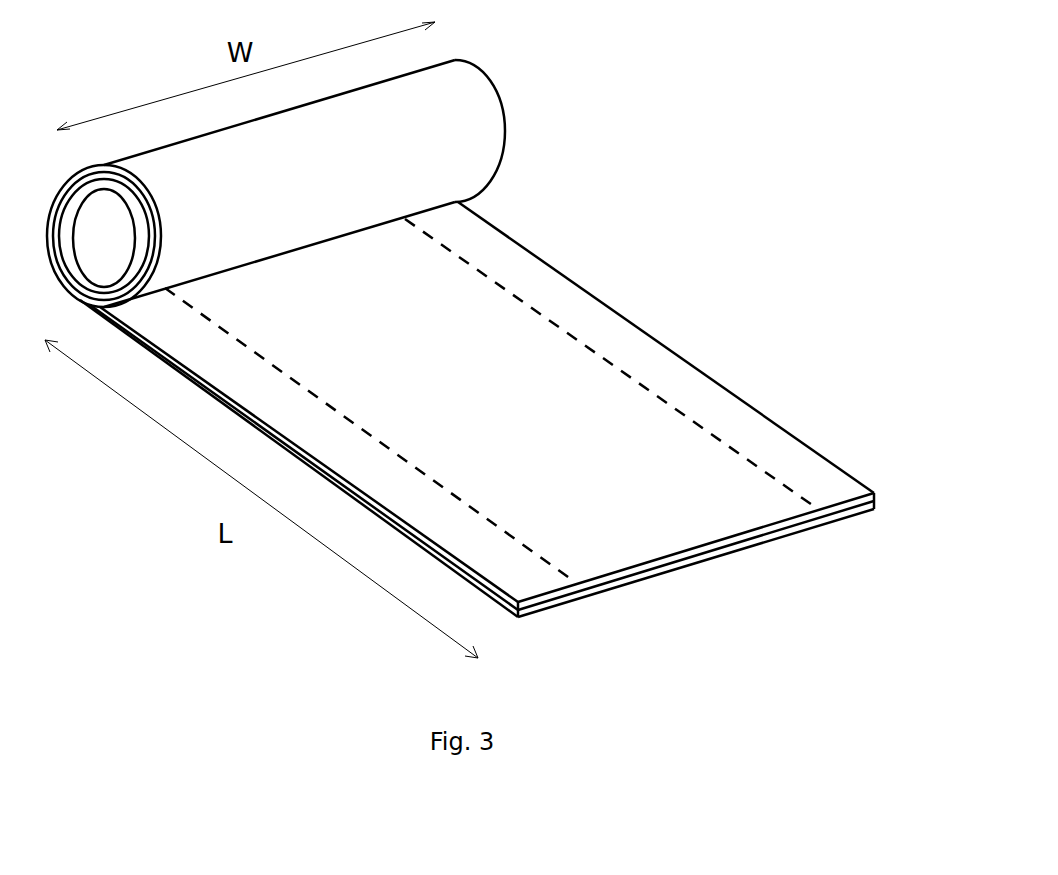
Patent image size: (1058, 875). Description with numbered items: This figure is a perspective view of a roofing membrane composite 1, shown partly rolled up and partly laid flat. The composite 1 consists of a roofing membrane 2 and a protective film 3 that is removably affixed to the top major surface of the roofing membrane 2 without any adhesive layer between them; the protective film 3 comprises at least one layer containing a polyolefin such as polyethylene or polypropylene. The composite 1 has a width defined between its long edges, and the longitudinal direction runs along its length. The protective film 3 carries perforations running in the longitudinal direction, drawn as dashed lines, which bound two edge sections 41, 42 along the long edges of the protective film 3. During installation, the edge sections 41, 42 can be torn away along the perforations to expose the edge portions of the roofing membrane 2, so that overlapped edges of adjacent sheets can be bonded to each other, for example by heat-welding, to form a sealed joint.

The roofing membrane composite 1 is at (685, 253).
The roofing membrane 2 is at (878, 509).
The protective film 3 is at (813, 470).
The edge section 41 is at (370, 435).
The edge section 42 is at (610, 363).